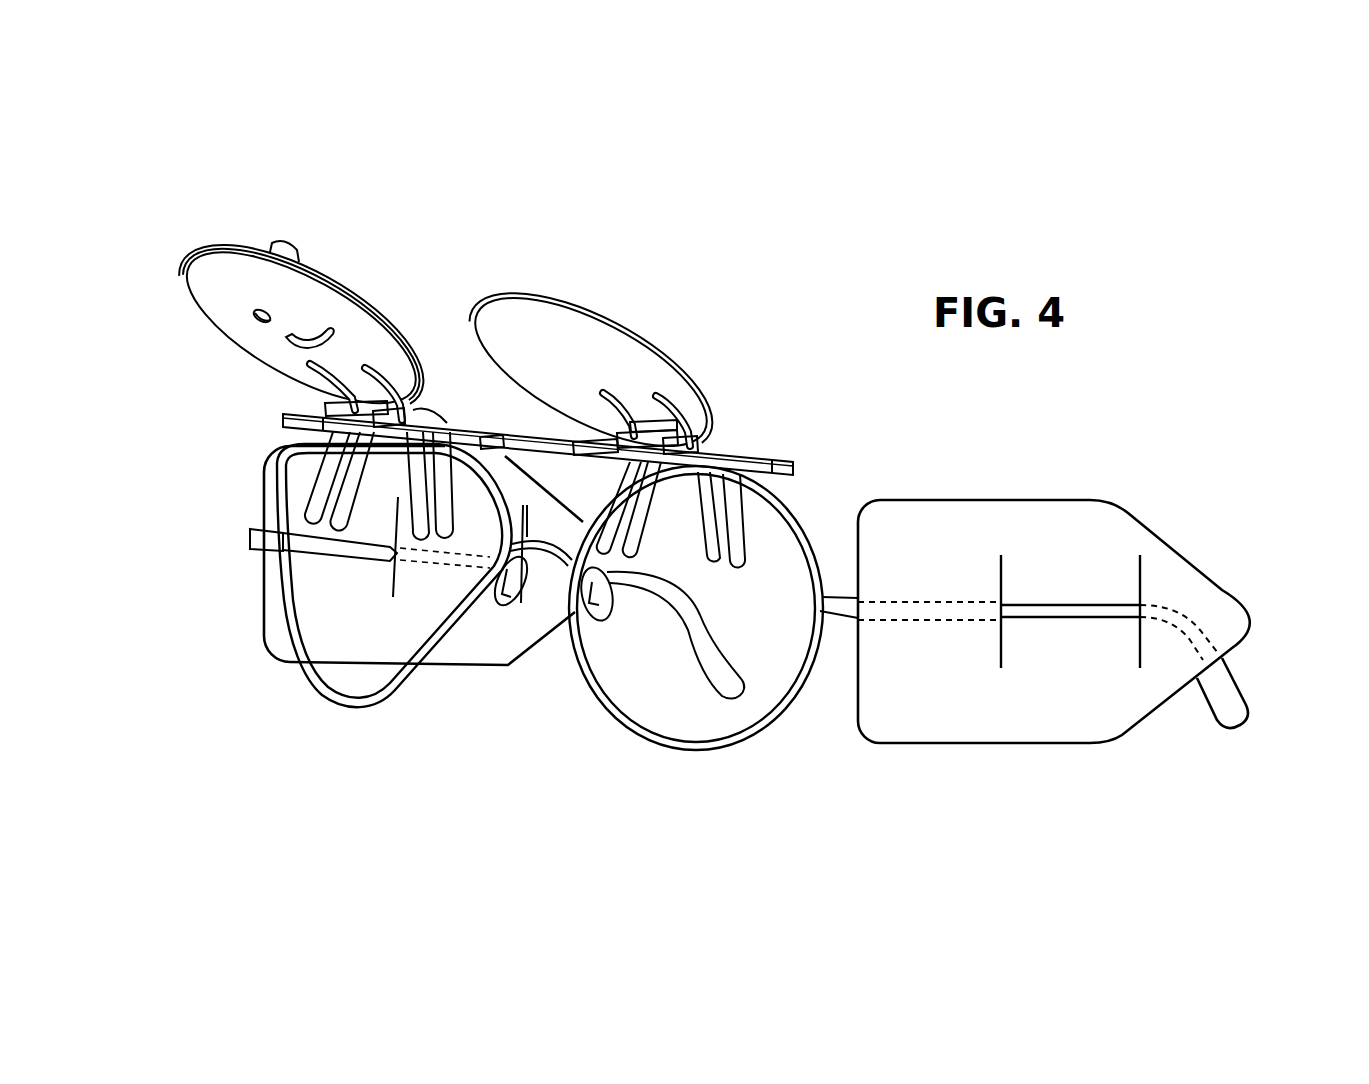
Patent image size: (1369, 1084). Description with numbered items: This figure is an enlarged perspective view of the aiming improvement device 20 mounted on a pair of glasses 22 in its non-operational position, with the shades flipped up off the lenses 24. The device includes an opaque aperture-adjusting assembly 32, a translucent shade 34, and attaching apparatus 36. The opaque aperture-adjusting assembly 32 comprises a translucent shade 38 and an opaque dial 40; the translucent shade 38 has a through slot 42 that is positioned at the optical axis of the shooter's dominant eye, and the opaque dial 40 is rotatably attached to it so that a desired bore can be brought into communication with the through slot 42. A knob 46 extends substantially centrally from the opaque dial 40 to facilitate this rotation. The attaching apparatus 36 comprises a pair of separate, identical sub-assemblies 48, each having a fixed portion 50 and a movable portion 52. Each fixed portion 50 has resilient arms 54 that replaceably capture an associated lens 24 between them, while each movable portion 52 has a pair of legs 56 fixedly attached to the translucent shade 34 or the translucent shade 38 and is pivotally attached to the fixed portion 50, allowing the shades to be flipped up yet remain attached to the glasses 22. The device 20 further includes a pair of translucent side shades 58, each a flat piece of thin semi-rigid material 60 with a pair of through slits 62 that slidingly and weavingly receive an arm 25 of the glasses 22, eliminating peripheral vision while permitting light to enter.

The aiming improvement device 20 is at (376, 180).
The glasses 22 is at (554, 646).
The lens 24 is at (353, 680).
The arm 25 is at (1230, 700).
The opaque aperture-adjusting assembly 32 is at (265, 285).
The translucent shade 34 is at (521, 284).
The attaching apparatus 36 is at (515, 406).
The translucent shade 38 is at (186, 306).
The opaque dial 40 is at (328, 282).
The through slot 42 is at (292, 341).
The knob 46 is at (272, 243).
The sub-assembly 48 is at (574, 437).
The fixed portion 50 is at (280, 425).
The movable portion 52 is at (417, 397).
The resilient arms 54 is at (432, 521).
The pair of legs 56 is at (366, 381).
The translucent side shade 58 is at (795, 642).
The flat piece of thin semi-rigid material 60 is at (795, 642).
The through slits 62 is at (1140, 642).